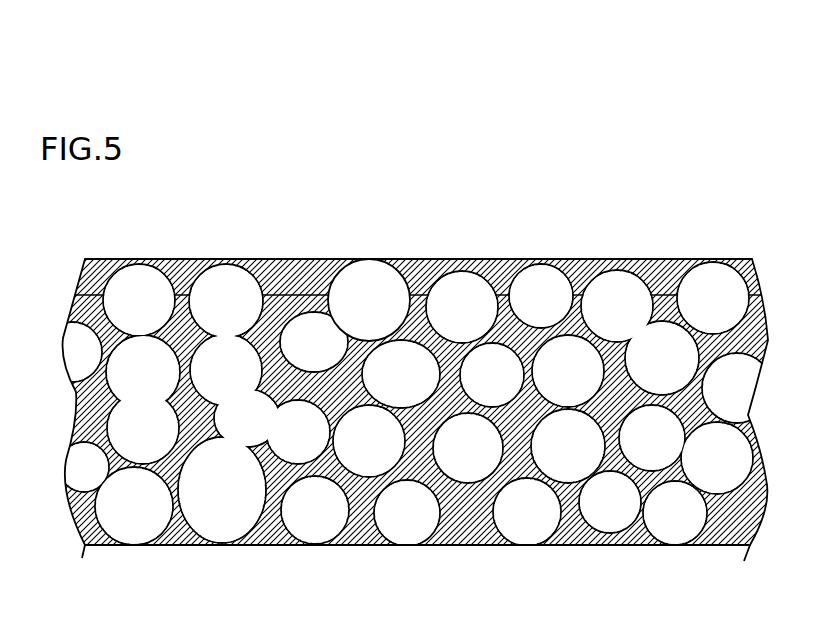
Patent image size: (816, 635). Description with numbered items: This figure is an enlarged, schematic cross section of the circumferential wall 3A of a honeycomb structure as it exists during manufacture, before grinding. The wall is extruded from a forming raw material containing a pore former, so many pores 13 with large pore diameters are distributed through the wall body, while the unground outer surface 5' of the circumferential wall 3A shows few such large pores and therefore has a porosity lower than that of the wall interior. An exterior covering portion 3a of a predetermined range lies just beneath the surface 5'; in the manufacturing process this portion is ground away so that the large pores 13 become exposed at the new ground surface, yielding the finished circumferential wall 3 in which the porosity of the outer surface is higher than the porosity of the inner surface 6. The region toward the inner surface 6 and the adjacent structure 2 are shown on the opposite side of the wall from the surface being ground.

The circumferential wall which has not been ground 3A is at (408, 363).
The circumferential wall 3 is at (408, 382).
The exterior covering portion 3a is at (305, 285).
The pores 13 is at (378, 307).
The surface of the circumferential wall which has not been ground 5' is at (418, 221).
The inner surface of the circumferential wall 6 is at (476, 546).
The current collector 2 is at (565, 580).